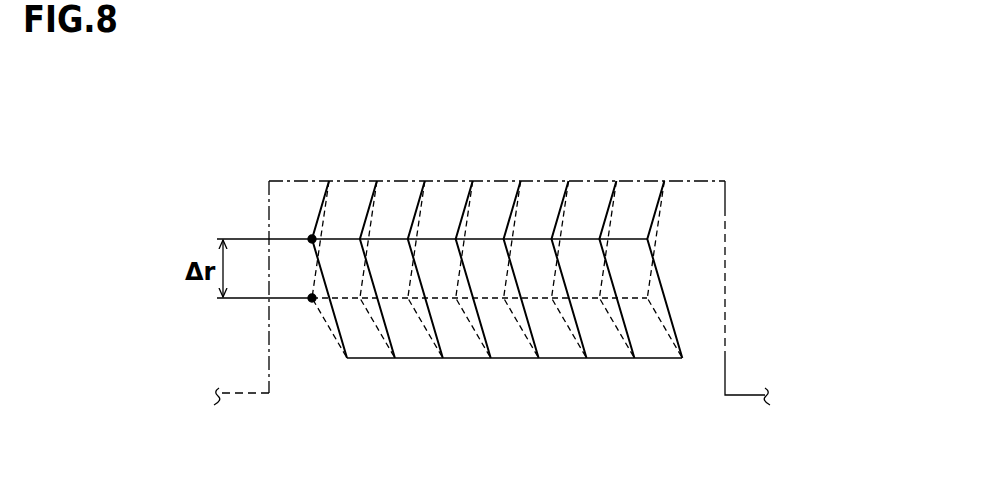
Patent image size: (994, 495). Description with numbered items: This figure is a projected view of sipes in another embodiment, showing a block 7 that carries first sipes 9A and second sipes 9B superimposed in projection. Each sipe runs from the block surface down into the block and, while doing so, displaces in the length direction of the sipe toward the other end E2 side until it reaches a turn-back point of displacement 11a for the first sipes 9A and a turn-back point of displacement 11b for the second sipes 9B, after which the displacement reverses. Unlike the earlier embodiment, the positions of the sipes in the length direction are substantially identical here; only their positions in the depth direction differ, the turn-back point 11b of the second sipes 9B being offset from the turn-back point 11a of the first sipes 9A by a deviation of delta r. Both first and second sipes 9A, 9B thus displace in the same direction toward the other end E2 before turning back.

The block 7 is at (702, 179).
The first sipe 9A is at (320, 208).
The second sipe 9B is at (329, 327).
The turn-back point of displacement 11a is at (309, 238).
The turn-back point of displacement 11b is at (310, 300).
The other end E2 is at (267, 205).